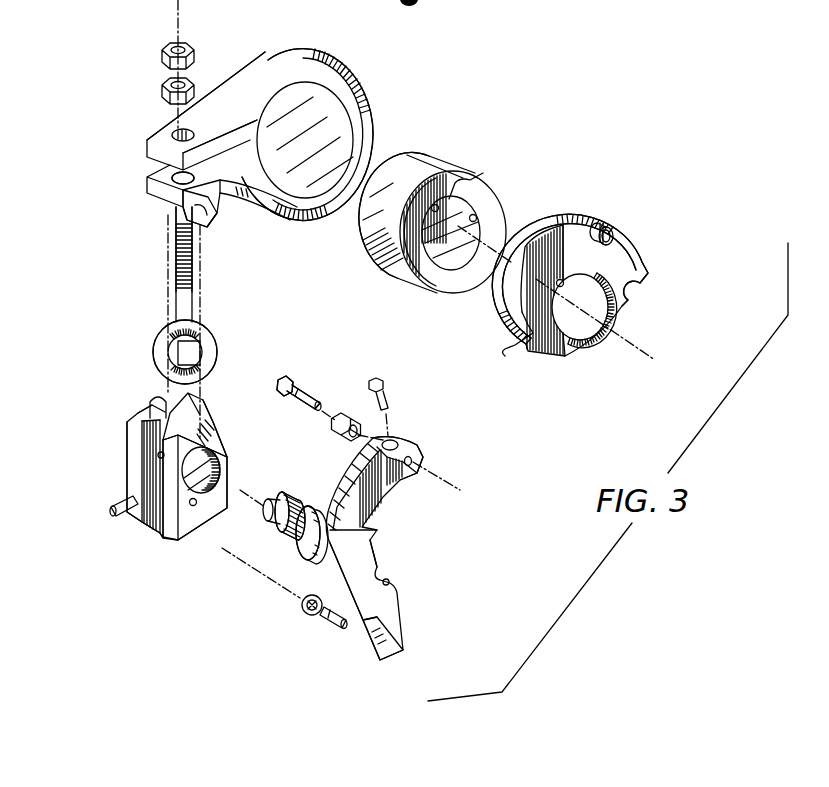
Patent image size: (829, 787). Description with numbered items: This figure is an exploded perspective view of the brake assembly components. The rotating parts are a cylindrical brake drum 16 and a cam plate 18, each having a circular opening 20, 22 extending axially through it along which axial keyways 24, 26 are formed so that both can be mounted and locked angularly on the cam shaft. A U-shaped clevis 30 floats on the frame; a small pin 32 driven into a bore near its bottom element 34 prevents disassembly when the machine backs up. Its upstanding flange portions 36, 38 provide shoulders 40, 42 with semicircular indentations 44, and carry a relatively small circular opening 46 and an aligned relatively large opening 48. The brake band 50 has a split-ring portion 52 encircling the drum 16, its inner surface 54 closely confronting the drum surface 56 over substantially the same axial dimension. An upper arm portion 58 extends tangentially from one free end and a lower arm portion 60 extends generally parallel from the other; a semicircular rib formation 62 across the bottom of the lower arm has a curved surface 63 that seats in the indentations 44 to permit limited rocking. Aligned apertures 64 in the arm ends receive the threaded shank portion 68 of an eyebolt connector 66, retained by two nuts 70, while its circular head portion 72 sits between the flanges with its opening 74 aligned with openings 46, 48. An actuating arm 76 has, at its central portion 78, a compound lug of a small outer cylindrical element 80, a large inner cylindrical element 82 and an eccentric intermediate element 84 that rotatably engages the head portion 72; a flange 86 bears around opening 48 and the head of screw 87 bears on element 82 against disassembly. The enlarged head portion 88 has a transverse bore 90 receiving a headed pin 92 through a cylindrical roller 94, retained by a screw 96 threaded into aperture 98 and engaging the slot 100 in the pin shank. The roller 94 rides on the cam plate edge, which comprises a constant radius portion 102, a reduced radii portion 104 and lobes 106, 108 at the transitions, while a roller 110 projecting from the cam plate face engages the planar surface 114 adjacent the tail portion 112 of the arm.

The brake drum 16 is at (443, 273).
The cam plate 18 is at (510, 360).
The circular opening 20 is at (477, 218).
The circular opening 22 is at (588, 334).
The axial keyway 24 is at (462, 180).
The axial keyway 26 is at (560, 220).
The clevis 30 is at (143, 534).
The pin 32 is at (115, 513).
The bottom element 34 is at (160, 537).
The upstanding flange portion 36 is at (132, 468).
The upstanding flange portion 38 is at (222, 468).
The shoulder 40 is at (145, 408).
The shoulder 42 is at (156, 398).
The indentation 44 is at (192, 400).
The circular opening 46 is at (163, 455).
The opening 48 is at (214, 448).
The brake band 50 is at (272, 46).
The split-ring portion 52 is at (366, 110).
The inner surface 54 is at (306, 183).
The surface of the drum 56 is at (385, 230).
The upper arm portion 58 is at (217, 107).
The lower arm portion 60 is at (232, 186).
The rib formation 62 is at (214, 195).
The curved surface 63 is at (186, 213).
The aperture 64 is at (174, 132).
The eyebolt connector 66 is at (176, 298).
The threaded shank portion 68 is at (175, 263).
The nut 70 is at (165, 88).
The circular head portion 72 is at (156, 350).
The circular opening 74 is at (200, 347).
The actuating arm 76 is at (391, 594).
The central portion 78 is at (320, 580).
The outer cylindrical element 80 is at (267, 517).
The inner cylindrical element 82 is at (318, 506).
The intermediate element 84 is at (289, 500).
The flange 86 is at (378, 531).
The screw 87 is at (330, 622).
The head portion 88 is at (406, 478).
The transverse bore 90 is at (411, 460).
The headed pin 92 is at (287, 393).
The cylindrical roller 94 is at (340, 432).
The screw 96 is at (384, 386).
The aperture 98 is at (394, 443).
The slot 100 is at (305, 395).
The constant radius portion 102 is at (575, 217).
The reduced radii portion 104 is at (643, 276).
The lobe 106 is at (518, 338).
The lobe 108 is at (649, 268).
The roller 110 is at (613, 225).
The tail portion 112 is at (391, 637).
The planar surface 114 is at (362, 612).